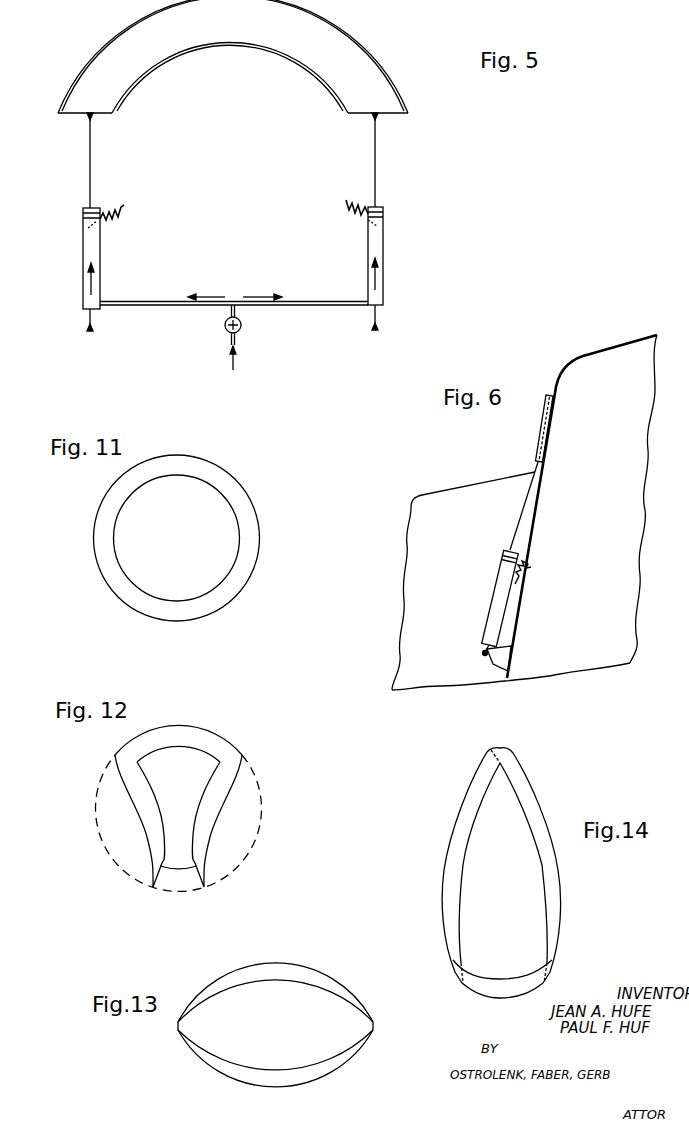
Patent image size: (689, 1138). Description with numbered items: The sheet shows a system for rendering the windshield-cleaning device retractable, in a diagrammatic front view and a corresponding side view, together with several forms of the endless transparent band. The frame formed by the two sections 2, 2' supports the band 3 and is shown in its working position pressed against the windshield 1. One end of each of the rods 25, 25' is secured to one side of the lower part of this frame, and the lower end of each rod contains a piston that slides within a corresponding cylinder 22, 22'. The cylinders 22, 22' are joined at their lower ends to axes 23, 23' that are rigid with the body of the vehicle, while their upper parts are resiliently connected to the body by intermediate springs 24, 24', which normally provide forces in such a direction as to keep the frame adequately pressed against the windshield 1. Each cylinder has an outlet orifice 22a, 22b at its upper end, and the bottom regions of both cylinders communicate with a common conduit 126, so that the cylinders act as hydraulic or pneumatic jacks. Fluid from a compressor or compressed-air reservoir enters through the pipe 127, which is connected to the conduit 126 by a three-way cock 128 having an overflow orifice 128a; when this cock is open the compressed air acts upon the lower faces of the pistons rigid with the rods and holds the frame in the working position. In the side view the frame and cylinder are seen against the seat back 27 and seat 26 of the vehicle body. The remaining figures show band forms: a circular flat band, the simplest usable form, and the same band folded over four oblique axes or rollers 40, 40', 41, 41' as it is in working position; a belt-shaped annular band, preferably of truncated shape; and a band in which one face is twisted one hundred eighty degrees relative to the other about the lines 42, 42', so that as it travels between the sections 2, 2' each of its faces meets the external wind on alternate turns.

In FIG. 6, the windshield 1 is at (553, 417).
In FIG. 5, the frame section 2 is at (233, 56).
In FIG. 5, the frame section 2' is at (230, 83).
In FIG. 5, the band 3 is at (338, 54).
In FIG. 6, the band 3 is at (536, 447).
In FIG. 5, the cylinder 22 is at (88, 241).
In FIG. 6, the cylinder 22 is at (479, 598).
In FIG. 5, the cylinder 22' is at (389, 231).
In FIG. 5, the outlet orifice 22a is at (98, 207).
In FIG. 5, the outlet orifice 22b is at (368, 205).
In FIG. 5, the axis 23 is at (61, 323).
In FIG. 6, the axis 23 is at (474, 663).
In FIG. 5, the axis 23' is at (411, 319).
In FIG. 5, the spring 24 is at (128, 226).
In FIG. 6, the spring 24 is at (549, 560).
In FIG. 5, the spring 24' is at (342, 224).
In FIG. 5, the rod 25 is at (62, 160).
In FIG. 6, the rod 25 is at (548, 506).
In FIG. 5, the rod 25' is at (411, 160).
In FIG. 5, the conduit / seat cushion 26 is at (154, 307).
In FIG. 6, the conduit / seat cushion 26 is at (443, 495).
In FIG. 6, the seat back 27 is at (593, 358).
In FIG. 5, the common conduit 126 is at (312, 306).
In FIG. 5, the pipe 127 is at (239, 341).
In FIG. 5, the three-way cock 128 is at (237, 330).
In FIG. 5, the overflow orifice 128a is at (241, 325).
In FIG. 12, the axis 40 is at (110, 819).
In FIG. 12, the axis 40' is at (246, 814).
In FIG. 12, the axis 41 is at (114, 886).
In FIG. 12, the axis 41' is at (246, 880).
In FIG. 14, the twist line 42 is at (480, 980).
In FIG. 14, the twist line 42' is at (580, 978).